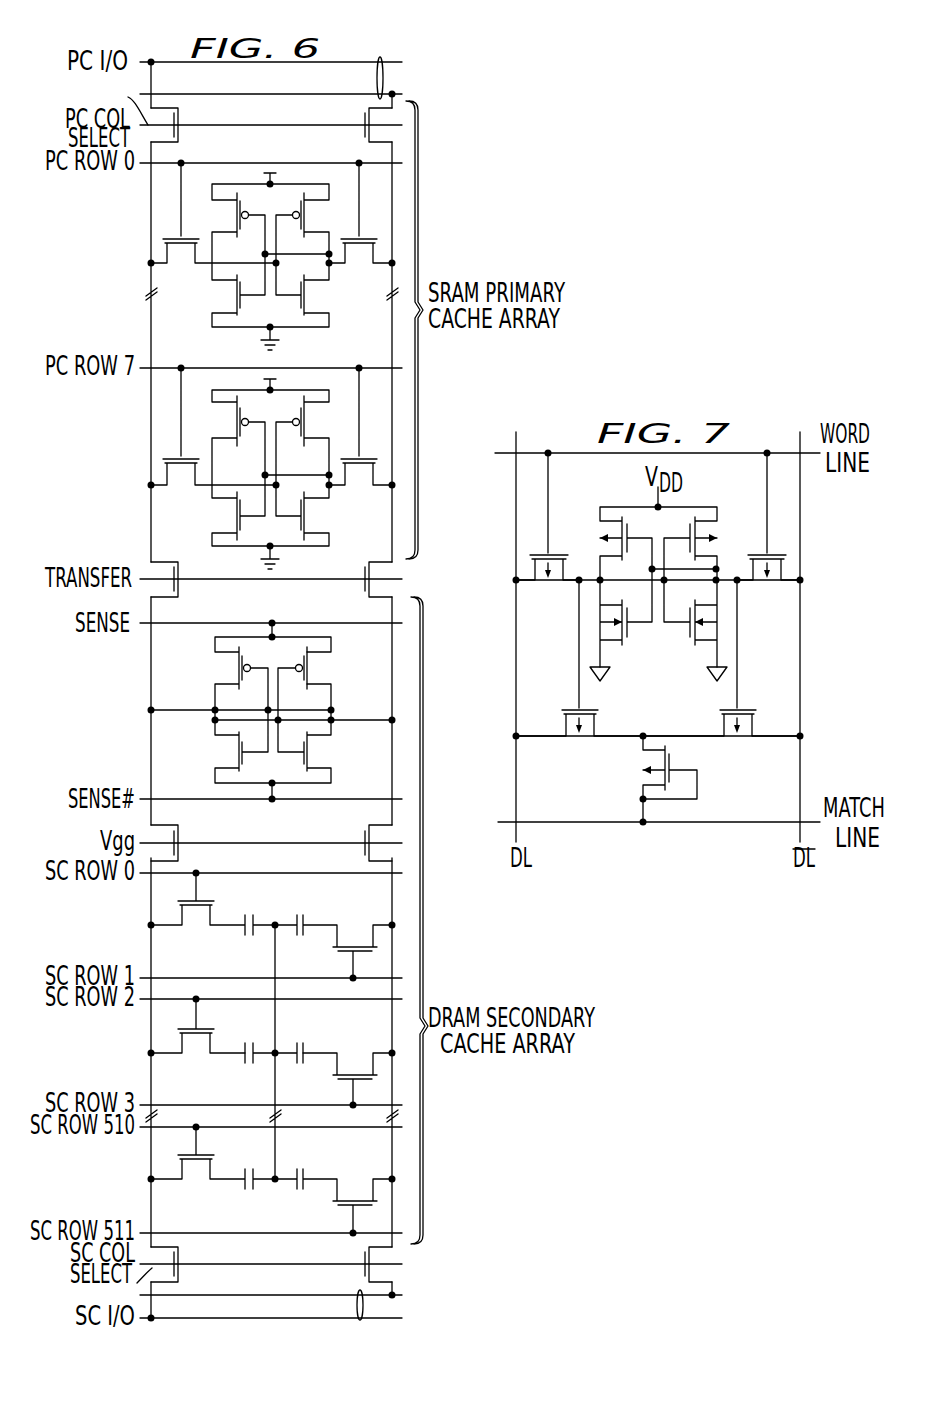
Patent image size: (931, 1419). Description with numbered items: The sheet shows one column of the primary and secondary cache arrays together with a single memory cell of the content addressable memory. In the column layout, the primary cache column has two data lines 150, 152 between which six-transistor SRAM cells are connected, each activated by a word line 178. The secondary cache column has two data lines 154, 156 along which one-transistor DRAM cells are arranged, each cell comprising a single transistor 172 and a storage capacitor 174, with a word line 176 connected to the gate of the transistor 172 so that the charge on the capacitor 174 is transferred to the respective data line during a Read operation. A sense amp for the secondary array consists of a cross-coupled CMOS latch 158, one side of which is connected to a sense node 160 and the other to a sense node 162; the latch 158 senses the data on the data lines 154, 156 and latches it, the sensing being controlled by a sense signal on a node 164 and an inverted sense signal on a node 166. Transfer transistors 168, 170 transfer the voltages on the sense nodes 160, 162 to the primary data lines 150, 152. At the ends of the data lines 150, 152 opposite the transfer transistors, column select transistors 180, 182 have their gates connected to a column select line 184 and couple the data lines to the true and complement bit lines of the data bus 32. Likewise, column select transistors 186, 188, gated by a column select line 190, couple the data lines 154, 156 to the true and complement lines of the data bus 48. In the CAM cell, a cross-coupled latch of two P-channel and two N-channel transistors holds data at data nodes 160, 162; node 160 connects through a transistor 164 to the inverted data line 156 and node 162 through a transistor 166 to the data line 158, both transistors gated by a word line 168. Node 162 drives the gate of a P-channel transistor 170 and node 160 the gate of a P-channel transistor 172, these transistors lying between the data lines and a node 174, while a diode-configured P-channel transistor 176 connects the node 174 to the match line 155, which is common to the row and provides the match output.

In FIG. 6, the data bus 32 is at (378, 56).
In FIG. 6, the data bus 48 is at (360, 1322).
In FIG. 6, the data line 150 is at (392, 527).
In FIG. 6, the data line 152 is at (151, 527).
In FIG. 6, the data line 154 is at (392, 900).
In FIG. 7, the match line 155 is at (808, 820).
In FIG. 6, the data line 156 is at (151, 900).
In FIG. 7, the data line 156 is at (800, 634).
In FIG. 6, the cross-coupled CMOS latch 158 is at (311, 668).
In FIG. 7, the cross-coupled CMOS latch 158 is at (516, 637).
In FIG. 6, the sense node 160 is at (392, 719).
In FIG. 7, the sense node 160 is at (738, 583).
In FIG. 6, the sense node 162 is at (151, 709).
In FIG. 7, the sense node 162 is at (578, 583).
In FIG. 6, the sense signal node 164 is at (272, 623).
In FIG. 7, the sense signal node 164 is at (760, 548).
In FIG. 6, the inverted sense signal node 166 is at (272, 799).
In FIG. 7, the inverted sense signal node 166 is at (548, 548).
In FIG. 6, the transfer transistor 168 is at (364, 575).
In FIG. 7, the transfer transistor 168 is at (806, 452).
In FIG. 6, the transfer transistor 170 is at (182, 587).
In FIG. 7, the transfer transistor 170 is at (579, 705).
In FIG. 6, the transistor 172 is at (365, 1042).
In FIG. 7, the transistor 172 is at (737, 705).
In FIG. 6, the storage capacitor 174 is at (310, 1025).
In FIG. 7, the storage capacitor 174 is at (644, 733).
In FIG. 6, the word line 176 is at (152, 1105).
In FIG. 7, the word line 176 is at (642, 799).
In FIG. 6, the word line 178 is at (148, 370).
In FIG. 6, the column select transistor 180 is at (361, 122).
In FIG. 6, the column select transistor 182 is at (186, 122).
In FIG. 6, the column select line 184 is at (251, 91).
In FIG. 6, the column select transistor 186 is at (362, 1260).
In FIG. 6, the column select transistor 188 is at (187, 1258).
In FIG. 6, the column select line 190 is at (280, 1267).